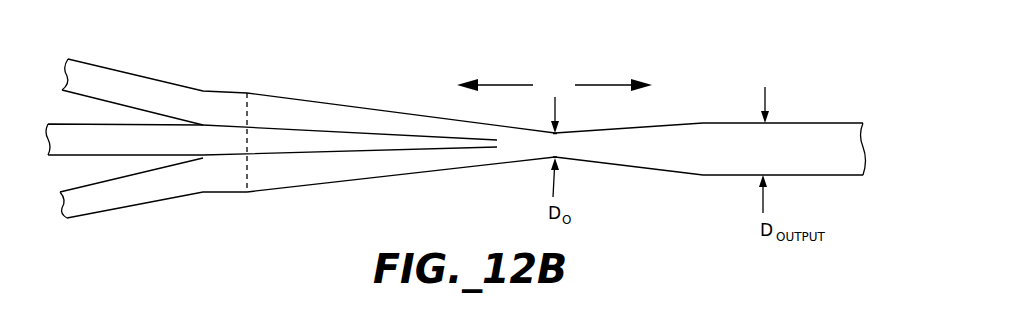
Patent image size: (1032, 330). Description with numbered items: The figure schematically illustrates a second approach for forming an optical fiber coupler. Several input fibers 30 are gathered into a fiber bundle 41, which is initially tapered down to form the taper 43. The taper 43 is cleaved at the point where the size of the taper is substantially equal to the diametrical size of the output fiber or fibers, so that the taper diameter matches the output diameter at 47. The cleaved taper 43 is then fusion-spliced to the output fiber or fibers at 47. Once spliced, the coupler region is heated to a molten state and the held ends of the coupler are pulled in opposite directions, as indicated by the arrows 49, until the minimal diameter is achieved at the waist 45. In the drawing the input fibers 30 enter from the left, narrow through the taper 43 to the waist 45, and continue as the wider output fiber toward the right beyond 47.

The input optical fibers 30 is at (112, 73).
The fiber bundle 41 is at (220, 97).
The taper 43 is at (365, 108).
The waist 45 is at (558, 133).
The output fiber splice point 47 is at (770, 122).
The pulling arrows 49 is at (517, 85).